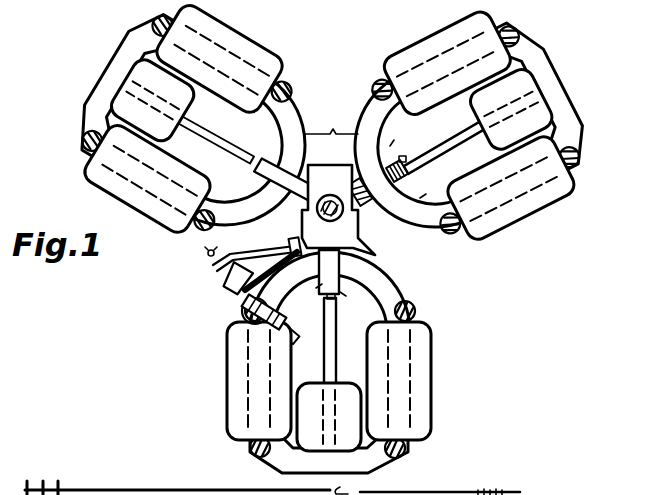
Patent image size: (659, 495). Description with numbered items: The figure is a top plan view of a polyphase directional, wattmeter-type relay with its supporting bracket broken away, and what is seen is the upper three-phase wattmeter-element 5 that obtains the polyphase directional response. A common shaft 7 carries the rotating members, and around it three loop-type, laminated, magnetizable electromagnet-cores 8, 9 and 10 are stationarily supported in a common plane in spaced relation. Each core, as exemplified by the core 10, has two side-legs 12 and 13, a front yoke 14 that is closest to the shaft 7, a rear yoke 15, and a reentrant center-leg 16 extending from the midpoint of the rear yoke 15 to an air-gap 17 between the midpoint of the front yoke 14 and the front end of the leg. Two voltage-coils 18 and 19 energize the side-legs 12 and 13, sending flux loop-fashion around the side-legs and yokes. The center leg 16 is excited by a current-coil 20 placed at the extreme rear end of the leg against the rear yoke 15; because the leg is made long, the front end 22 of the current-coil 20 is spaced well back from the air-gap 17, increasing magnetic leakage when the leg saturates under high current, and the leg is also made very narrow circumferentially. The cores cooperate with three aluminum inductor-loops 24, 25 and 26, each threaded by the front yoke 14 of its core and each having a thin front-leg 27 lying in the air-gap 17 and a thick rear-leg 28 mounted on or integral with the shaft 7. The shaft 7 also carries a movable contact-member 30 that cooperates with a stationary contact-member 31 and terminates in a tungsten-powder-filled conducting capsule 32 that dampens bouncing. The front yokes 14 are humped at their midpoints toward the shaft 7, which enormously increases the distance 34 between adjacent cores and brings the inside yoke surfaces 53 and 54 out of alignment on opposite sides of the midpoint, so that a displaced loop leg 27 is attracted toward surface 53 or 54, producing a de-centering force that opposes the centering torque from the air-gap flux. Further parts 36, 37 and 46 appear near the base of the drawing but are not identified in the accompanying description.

The upper three-phase wattmeter-element 5 is at (308, 52).
The common shaft 7 is at (320, 176).
The electromagnet-core 8 is at (580, 62).
The electromagnet-core 9 is at (73, 88).
The electromagnet-core 10 is at (458, 308).
The side-leg 12 is at (246, 402).
The side-leg 13 is at (412, 398).
The front yoke 14 is at (393, 283).
The rear yoke 15 is at (580, 128).
The reentrant center-leg 16 is at (318, 331).
The air-gap 17 is at (337, 305).
The voltage-coil 18 is at (226, 354).
The voltage-coil 19 is at (432, 352).
The current-coil 20 is at (271, 462).
The front end of the current-coil 22 is at (343, 382).
The aluminum inductor-loop 24 is at (345, 172).
The aluminum inductor-loop 25 is at (267, 148).
The aluminum inductor-loop 26 is at (319, 268).
The thin front-leg 27 is at (405, 178).
The thick rear-leg 28 is at (366, 205).
The movable contact-member 30 is at (212, 266).
The stationary contact-member 31 is at (244, 301).
The tungsten-powder-filled conducting capsule 32 is at (227, 286).
The distance between adjacent electromagnet-cores 34 is at (331, 121).
The base rail 36 is at (439, 494).
The graduated scale 37 is at (508, 493).
The support foot 46 is at (366, 493).
The iron surface 53 is at (314, 288).
The iron surface 54 is at (346, 297).